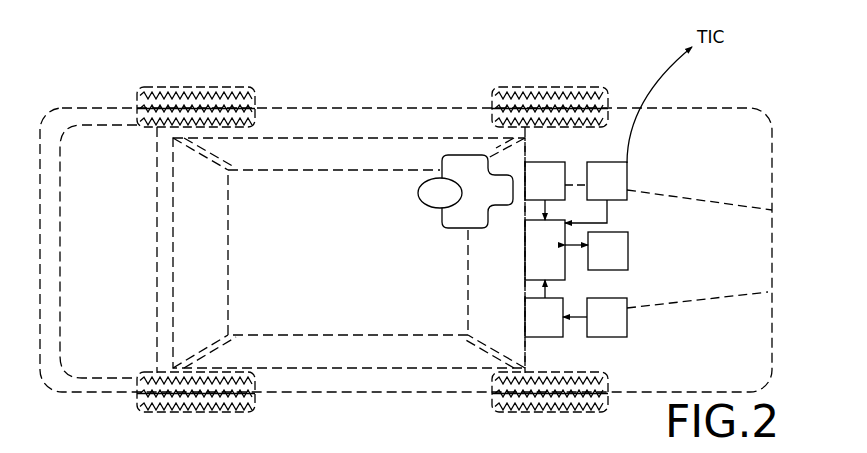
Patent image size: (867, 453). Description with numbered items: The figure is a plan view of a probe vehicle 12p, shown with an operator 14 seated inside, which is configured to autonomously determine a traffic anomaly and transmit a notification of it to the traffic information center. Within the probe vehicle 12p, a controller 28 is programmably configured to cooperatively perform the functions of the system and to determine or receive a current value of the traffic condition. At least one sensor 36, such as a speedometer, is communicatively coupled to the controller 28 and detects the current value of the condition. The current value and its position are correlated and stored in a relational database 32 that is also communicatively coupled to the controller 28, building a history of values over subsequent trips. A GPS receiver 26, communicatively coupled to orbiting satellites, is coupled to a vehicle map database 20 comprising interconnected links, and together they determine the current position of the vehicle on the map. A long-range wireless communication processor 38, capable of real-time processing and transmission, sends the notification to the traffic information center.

The probe vehicle 12p is at (797, 246).
The operator 14 is at (493, 200).
The sensor 36 is at (532, 194).
The long-range wireless communication processor 38 is at (594, 194).
The controller 28 is at (532, 259).
The relational database 32 is at (595, 263).
The vehicle map database 20 is at (531, 329).
The GPS receiver 26 is at (594, 329).